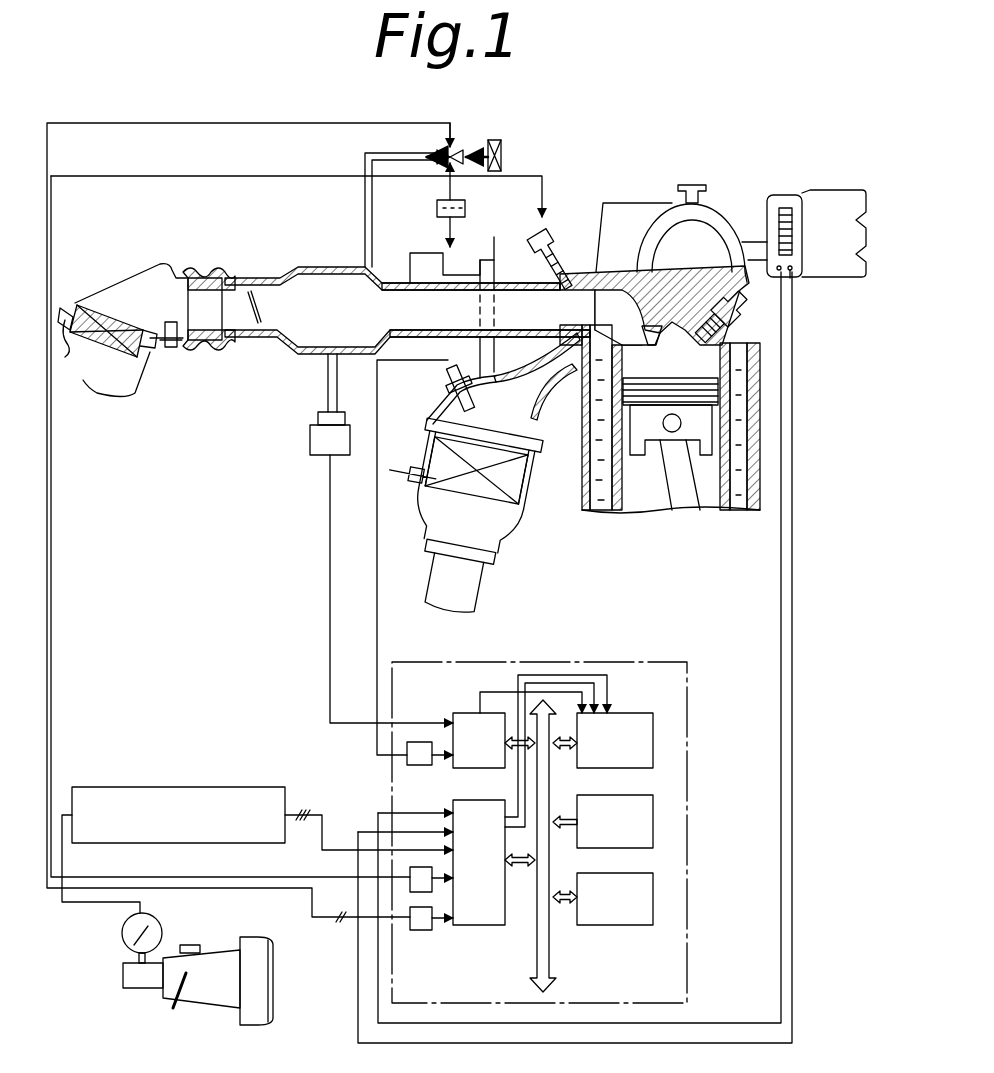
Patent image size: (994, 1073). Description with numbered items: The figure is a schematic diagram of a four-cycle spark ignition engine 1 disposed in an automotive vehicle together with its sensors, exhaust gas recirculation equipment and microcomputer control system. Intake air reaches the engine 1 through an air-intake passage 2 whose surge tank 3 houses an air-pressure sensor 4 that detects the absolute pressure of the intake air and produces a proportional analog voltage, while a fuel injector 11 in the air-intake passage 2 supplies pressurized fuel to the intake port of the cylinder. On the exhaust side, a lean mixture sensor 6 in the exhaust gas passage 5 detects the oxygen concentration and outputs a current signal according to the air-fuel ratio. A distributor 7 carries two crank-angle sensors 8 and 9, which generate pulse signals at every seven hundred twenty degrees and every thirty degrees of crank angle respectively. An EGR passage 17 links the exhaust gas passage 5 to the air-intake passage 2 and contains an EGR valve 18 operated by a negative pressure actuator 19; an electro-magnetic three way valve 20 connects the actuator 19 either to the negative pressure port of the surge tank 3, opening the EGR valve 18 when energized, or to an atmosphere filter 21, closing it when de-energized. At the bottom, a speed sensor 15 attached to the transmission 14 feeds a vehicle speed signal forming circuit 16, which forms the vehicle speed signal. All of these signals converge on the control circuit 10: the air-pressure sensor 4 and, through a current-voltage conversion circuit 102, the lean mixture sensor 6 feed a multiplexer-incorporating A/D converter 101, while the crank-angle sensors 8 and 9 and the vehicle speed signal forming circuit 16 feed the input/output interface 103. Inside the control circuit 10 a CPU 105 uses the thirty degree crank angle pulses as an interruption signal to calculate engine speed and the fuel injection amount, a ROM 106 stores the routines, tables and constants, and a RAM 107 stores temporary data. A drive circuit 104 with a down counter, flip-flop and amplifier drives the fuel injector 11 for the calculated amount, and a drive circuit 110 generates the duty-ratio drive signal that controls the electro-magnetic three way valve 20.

The engine 1 is at (604, 205).
The air-intake passage 2 is at (417, 333).
The surge tank 3 is at (332, 293).
The air-pressure sensor 4 is at (321, 438).
The exhaust gas passage 5 is at (523, 417).
The lean mixture sensor 6 is at (456, 367).
The distributor 7 is at (828, 213).
The crank-angle sensor 8 is at (778, 272).
The crank-angle sensor 9 is at (791, 278).
The control circuit 10 is at (633, 660).
The fuel injector 11 is at (549, 241).
The transmission 14 is at (210, 996).
The speed sensor 15 is at (125, 946).
The vehicle speed signal forming circuit 16 is at (196, 787).
The EGR passage 17 is at (504, 294).
The EGR valve 18 is at (455, 250).
The negative pressure actuator 19 is at (465, 207).
The electro-magnetic three way valve 20 is at (436, 157).
The atmosphere filter 21 is at (500, 158).
The analog-to-digital converter 101 is at (453, 712).
The current-voltage conversion circuit 102 is at (420, 766).
The input/output interface 103 is at (490, 926).
The drive circuit 104 is at (410, 871).
The central processing unit 105 is at (653, 743).
The read-only memory 106 is at (653, 825).
The random access memory 107 is at (653, 897).
The drive circuit 110 is at (424, 931).